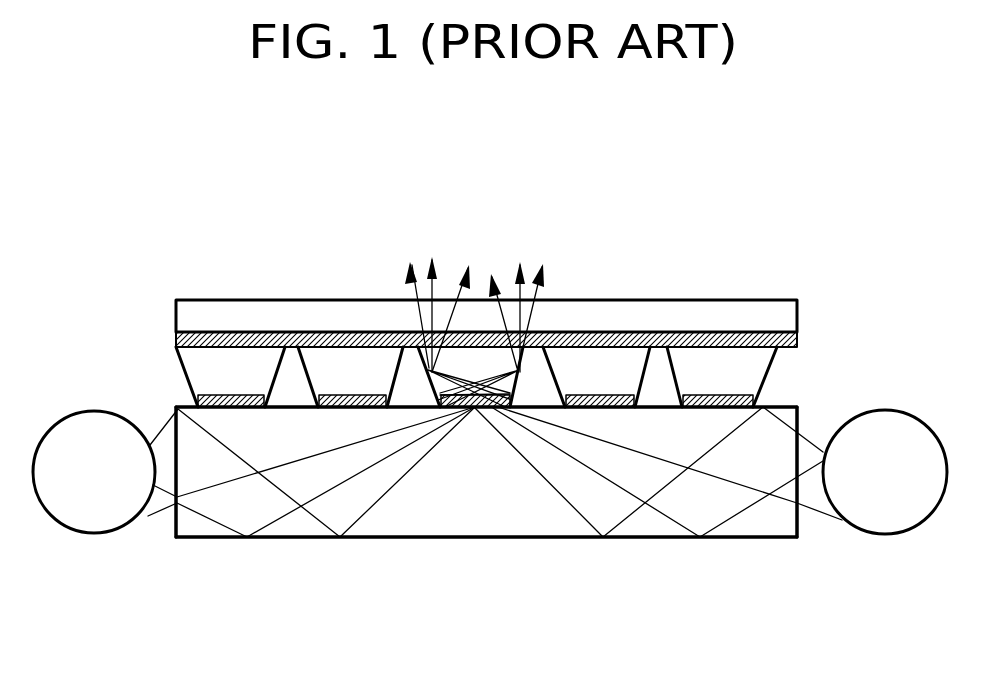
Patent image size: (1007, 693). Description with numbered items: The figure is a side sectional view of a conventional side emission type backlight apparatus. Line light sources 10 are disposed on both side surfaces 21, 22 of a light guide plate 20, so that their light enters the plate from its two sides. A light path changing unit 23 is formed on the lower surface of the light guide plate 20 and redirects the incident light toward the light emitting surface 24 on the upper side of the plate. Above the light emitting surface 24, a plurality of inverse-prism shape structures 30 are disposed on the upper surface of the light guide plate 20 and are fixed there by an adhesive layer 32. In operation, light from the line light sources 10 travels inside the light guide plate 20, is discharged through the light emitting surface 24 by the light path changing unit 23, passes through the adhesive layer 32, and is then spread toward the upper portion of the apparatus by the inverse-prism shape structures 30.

The line light source 10 is at (93, 524).
The light guide plate 20 is at (443, 528).
The side surface 21 is at (175, 523).
The side surface 22 is at (800, 523).
The light path changing unit 23 is at (537, 538).
The light emitting surface 24 is at (290, 407).
The inverse-prism shape structure 30 is at (755, 373).
The adhesive layer 32 is at (797, 334).